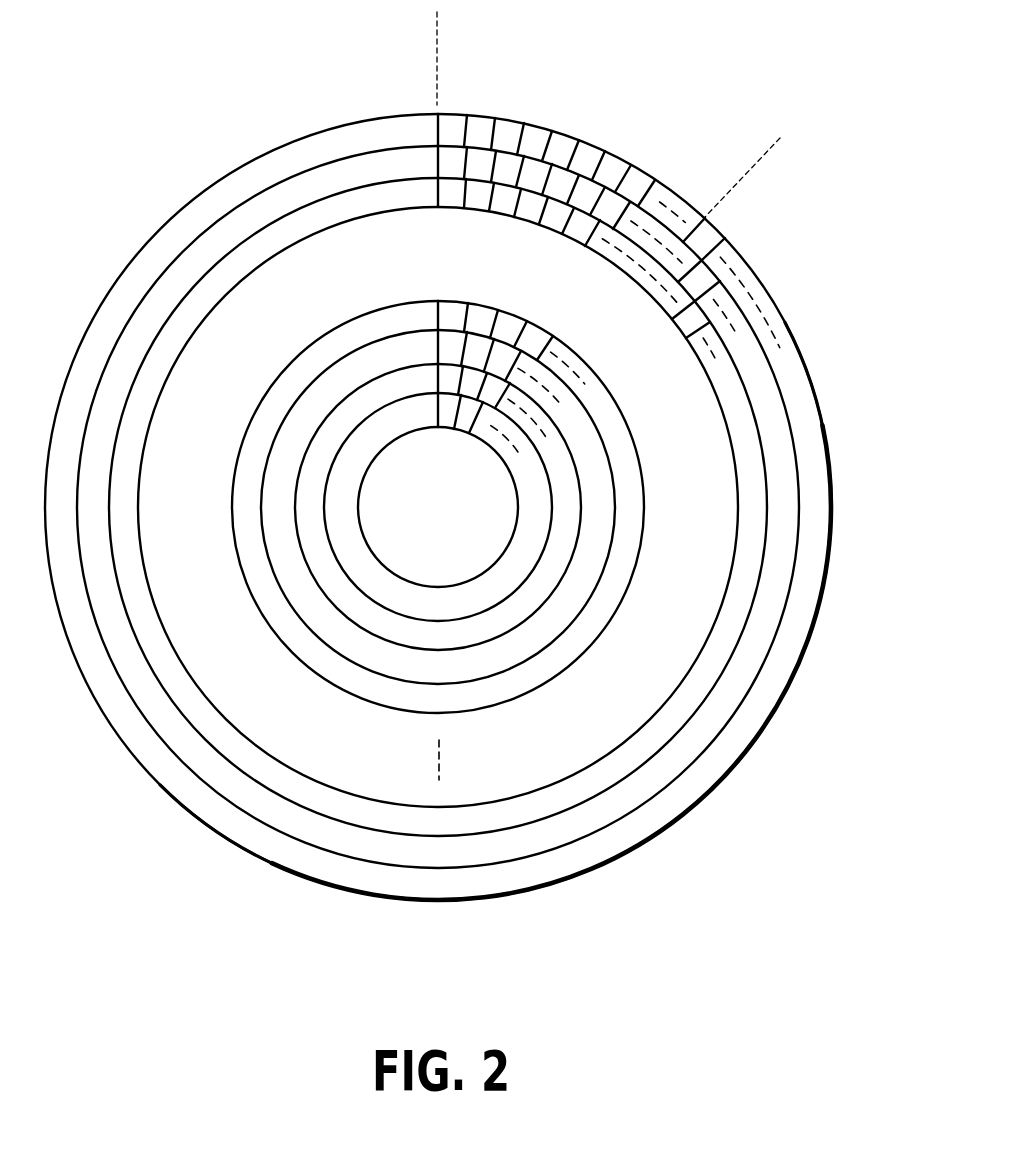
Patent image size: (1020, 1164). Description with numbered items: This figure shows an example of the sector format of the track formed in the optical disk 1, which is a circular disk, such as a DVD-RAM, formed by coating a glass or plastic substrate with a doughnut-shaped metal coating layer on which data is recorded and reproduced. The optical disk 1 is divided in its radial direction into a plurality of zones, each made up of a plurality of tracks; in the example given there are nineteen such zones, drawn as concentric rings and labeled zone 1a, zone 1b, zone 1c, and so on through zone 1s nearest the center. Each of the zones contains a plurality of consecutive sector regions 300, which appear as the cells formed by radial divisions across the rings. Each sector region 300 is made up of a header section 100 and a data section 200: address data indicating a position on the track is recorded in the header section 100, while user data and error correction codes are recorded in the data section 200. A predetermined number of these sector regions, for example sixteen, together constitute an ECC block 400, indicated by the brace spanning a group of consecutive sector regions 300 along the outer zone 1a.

The optical disk 1 is at (816, 207).
The zone 1a is at (755, 280).
The zone 1b is at (770, 404).
The zone 1c is at (695, 690).
The zone 1s is at (510, 557).
The header section 100 is at (492, 128).
The data section 200 is at (505, 137).
The sector region 300 is at (526, 118).
The ECC block 400 is at (783, 132).